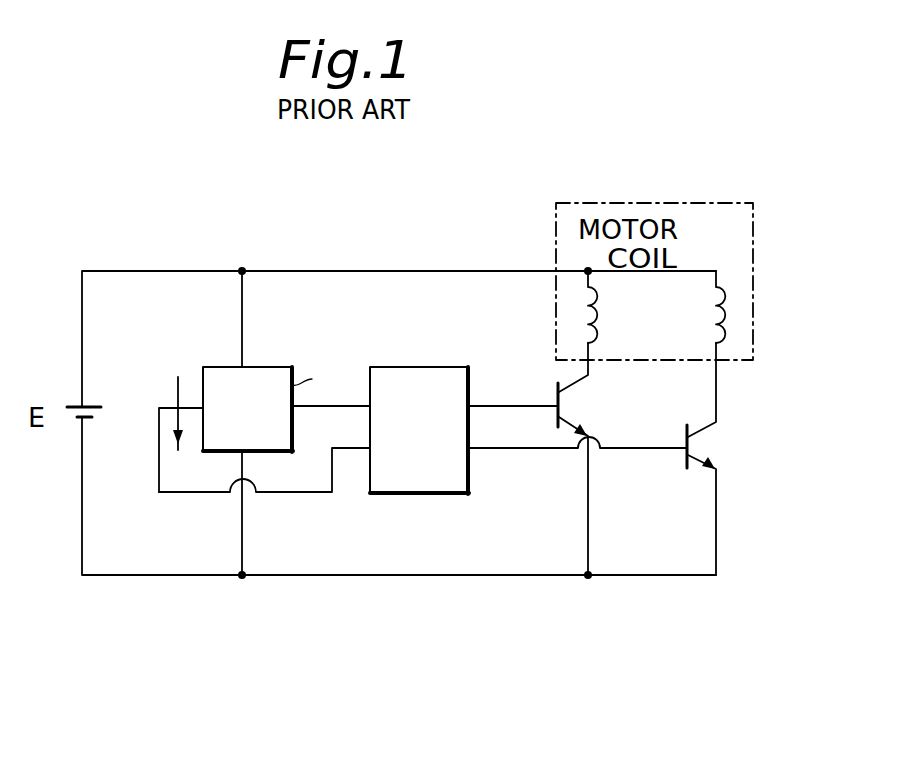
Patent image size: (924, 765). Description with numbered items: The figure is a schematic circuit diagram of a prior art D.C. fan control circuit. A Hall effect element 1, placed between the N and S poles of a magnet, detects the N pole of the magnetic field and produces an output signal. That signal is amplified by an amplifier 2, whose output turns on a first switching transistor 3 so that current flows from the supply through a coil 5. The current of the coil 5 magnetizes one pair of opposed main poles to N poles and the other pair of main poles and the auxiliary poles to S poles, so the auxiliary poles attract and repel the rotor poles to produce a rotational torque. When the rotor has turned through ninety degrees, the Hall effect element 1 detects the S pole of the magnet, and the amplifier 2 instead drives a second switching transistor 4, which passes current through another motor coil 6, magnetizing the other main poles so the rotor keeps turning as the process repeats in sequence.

The Hall effect element 1 is at (250, 368).
The amplifier 2 is at (408, 367).
The transistor T1 3 is at (568, 436).
The transistor T2 4 is at (713, 459).
The coil 5 is at (573, 298).
The motor coil 6 is at (734, 314).